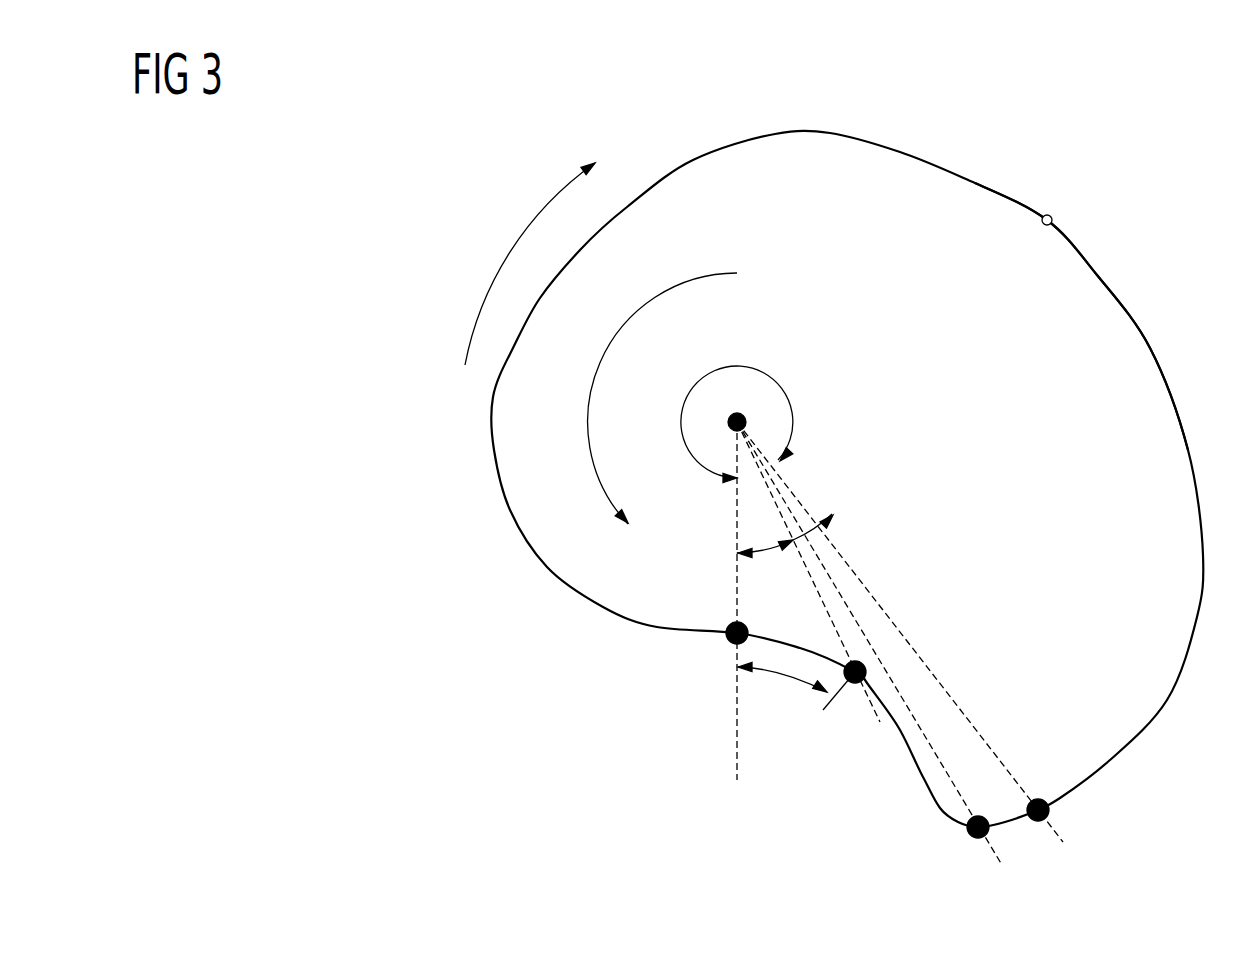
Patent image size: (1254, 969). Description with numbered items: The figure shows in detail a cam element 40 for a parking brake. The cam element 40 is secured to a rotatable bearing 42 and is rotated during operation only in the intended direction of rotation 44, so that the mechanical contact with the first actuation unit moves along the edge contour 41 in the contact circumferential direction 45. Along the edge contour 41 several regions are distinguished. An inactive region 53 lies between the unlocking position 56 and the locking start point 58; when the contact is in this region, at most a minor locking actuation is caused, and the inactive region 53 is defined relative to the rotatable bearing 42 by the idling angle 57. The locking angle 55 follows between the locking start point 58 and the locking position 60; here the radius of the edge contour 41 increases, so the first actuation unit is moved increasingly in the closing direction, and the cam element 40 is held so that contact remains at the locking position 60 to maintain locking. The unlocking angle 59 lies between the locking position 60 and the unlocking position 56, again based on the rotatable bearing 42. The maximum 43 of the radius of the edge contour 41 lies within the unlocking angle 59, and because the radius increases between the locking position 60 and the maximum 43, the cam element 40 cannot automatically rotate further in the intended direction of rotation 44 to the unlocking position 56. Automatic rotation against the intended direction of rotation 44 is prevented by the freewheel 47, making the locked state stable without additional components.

The cam element 40 is at (797, 152).
The edge contour 41 is at (1097, 277).
The rotatable bearing 42 is at (740, 418).
The maximum 43 is at (977, 837).
The intended direction of rotation 44 is at (610, 353).
The contact circumferential direction 45 is at (503, 263).
The freewheel 47 is at (1053, 217).
The inactive region 53 is at (787, 675).
The locking angle 55 is at (795, 418).
The unlocking position 56 is at (855, 684).
The idling angle 57 is at (753, 555).
The locking start point 58 is at (737, 720).
The unlocking angle 59 is at (822, 532).
The locking position 60 is at (1038, 822).